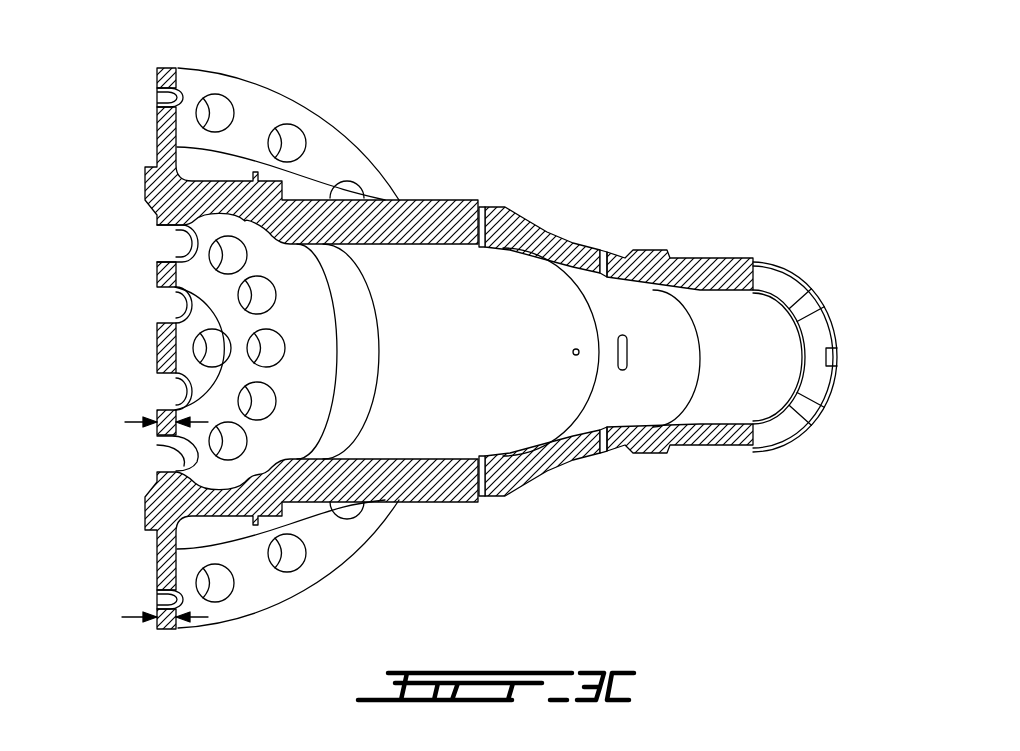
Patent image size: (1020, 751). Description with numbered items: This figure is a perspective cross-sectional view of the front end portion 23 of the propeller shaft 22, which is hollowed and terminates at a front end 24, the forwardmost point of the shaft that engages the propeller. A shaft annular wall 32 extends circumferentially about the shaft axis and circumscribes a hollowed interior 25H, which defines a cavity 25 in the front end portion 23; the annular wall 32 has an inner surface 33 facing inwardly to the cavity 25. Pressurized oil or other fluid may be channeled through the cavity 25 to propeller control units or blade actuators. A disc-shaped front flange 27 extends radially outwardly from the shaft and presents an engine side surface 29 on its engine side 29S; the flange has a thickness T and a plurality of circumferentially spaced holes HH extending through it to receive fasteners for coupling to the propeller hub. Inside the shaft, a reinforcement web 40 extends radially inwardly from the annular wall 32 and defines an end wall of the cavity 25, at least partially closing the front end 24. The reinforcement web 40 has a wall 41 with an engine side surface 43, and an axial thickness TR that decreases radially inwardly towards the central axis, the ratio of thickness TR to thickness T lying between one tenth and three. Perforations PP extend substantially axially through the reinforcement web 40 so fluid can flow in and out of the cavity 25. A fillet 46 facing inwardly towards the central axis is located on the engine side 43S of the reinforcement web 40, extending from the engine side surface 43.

The front flange 27 is at (138, 86).
The engine side surface 29 is at (205, 76).
The engine side 29S is at (253, 93).
The holes HH is at (230, 118).
The front end portion 23 is at (484, 96).
The shaft 22 is at (489, 173).
The front end 24 is at (144, 170).
The reinforcement web 40 is at (150, 261).
The wall 41 is at (176, 287).
The perforations PP is at (150, 312).
The axial thickness TR is at (162, 438).
The engine side surface 43 is at (219, 485).
The fillet 46 is at (160, 478).
The thickness T is at (164, 630).
The engine side 43S is at (243, 425).
The shaft annular wall 32 is at (453, 502).
The inner surface 33 is at (497, 458).
The cavity 25 is at (445, 284).
The hollowed interior 25H is at (470, 336).